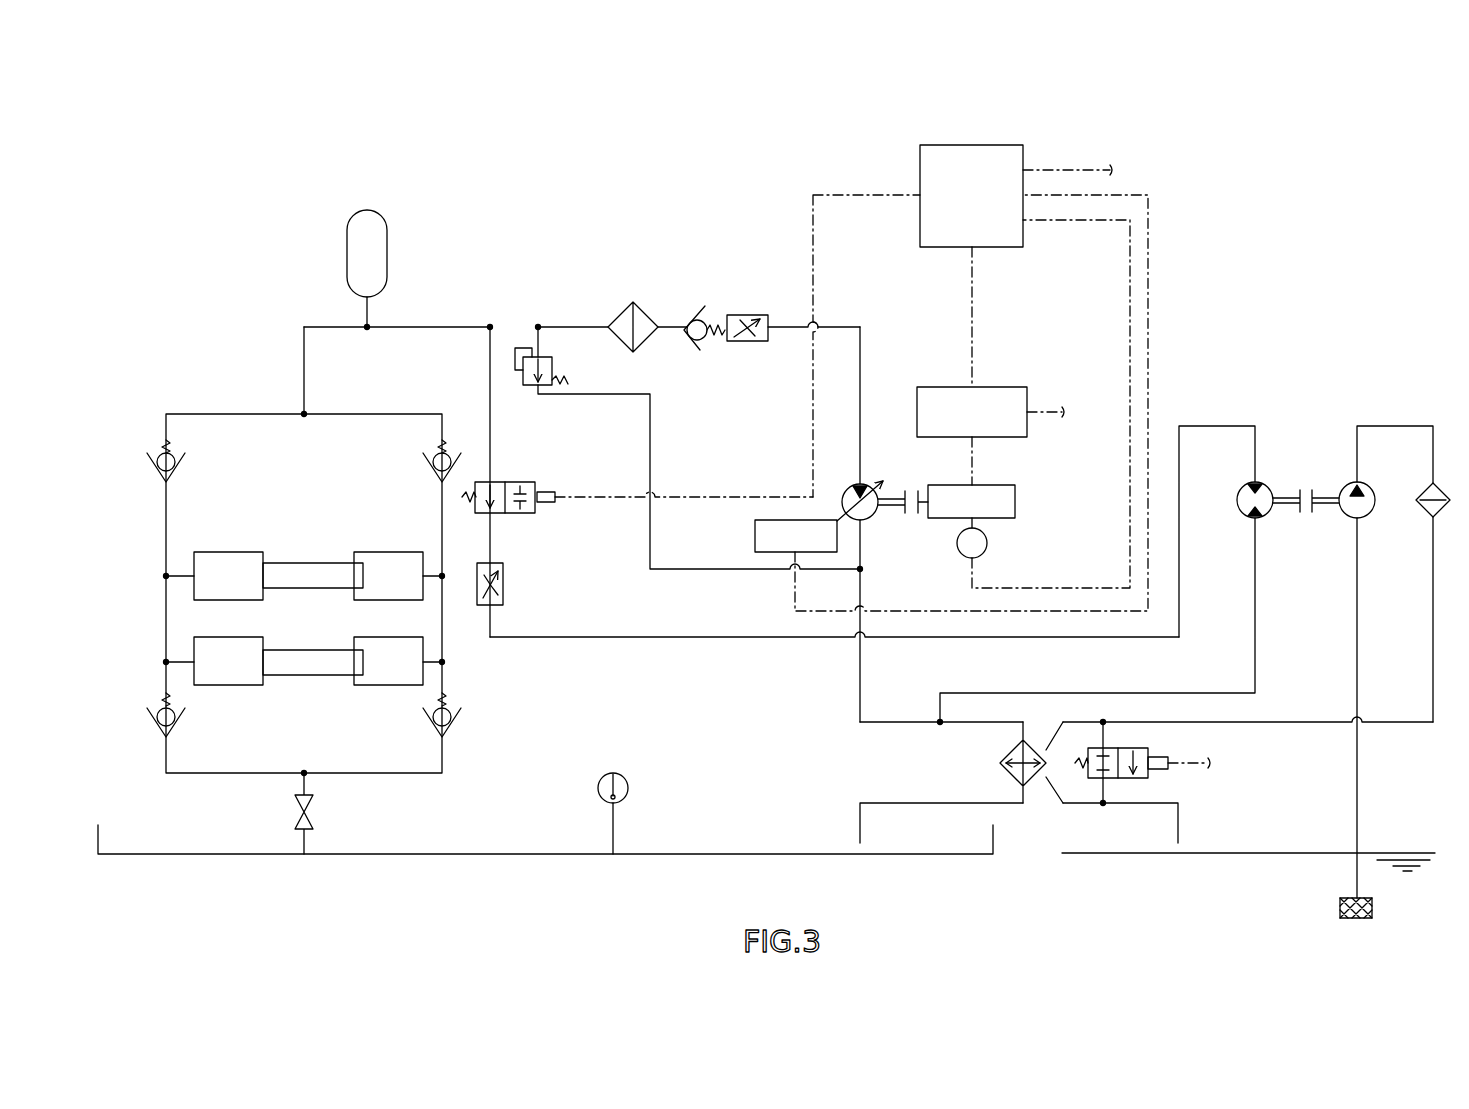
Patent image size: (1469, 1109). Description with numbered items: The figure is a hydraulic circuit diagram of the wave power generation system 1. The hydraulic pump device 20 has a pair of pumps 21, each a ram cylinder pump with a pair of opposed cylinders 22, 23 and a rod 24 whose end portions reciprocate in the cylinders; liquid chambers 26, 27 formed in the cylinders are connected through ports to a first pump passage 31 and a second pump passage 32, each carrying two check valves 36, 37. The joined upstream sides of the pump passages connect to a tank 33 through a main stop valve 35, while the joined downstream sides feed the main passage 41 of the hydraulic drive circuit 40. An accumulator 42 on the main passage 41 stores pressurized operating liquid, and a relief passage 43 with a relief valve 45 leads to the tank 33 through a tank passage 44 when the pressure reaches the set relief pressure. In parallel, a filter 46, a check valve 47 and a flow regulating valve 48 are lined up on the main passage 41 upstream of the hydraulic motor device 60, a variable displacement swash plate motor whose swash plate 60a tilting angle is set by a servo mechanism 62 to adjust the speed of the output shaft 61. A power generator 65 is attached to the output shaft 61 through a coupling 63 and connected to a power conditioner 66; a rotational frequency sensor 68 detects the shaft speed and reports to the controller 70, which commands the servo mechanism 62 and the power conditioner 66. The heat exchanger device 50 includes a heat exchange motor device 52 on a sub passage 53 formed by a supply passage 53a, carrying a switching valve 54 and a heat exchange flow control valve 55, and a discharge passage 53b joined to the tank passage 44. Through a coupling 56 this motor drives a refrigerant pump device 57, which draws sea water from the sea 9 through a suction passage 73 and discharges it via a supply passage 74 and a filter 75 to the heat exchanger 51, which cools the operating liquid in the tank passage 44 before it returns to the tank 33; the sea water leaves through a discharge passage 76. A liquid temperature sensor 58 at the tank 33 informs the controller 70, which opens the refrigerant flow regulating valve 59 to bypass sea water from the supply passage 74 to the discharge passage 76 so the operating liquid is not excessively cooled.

The wave power generation system 1 is at (1348, 122).
The tank / sea 9 is at (1297, 852).
The hydraulic pump device 20 is at (158, 400).
The pump 21 is at (255, 528).
The cylinder 22 is at (220, 552).
The cylinder 23 is at (410, 552).
The rod 24 is at (309, 589).
The first liquid chamber 26 is at (228, 620).
The second liquid chamber 27 is at (388, 620).
The first pump passage 31 is at (166, 610).
The second pump passage 32 is at (442, 650).
The tank 33 is at (481, 857).
The main stop valve 35 is at (313, 812).
The check valve 36 is at (157, 730).
The check valve 37 is at (157, 478).
The hydraulic drive circuit 40 is at (311, 128).
The main passage 41 is at (304, 371).
The accumulator 42 is at (377, 215).
The relief passage 43 is at (615, 395).
The tank passage 44 is at (916, 725).
The relief valve 45 is at (552, 354).
The filter 46 is at (640, 312).
The check valve 47 is at (697, 318).
The flow regulating valve 48 is at (760, 317).
The heat exchanger device 50 is at (1355, 358).
The heat exchanger 51 is at (1005, 768).
The heat exchange motor device 52 is at (1245, 490).
The sub passage 53 is at (712, 648).
The supply passage 53a is at (636, 640).
The discharge passage 53b is at (1256, 640).
The switching valve 54 is at (532, 482).
The heat exchange flow control valve 55 is at (503, 586).
The coupling 56 is at (1305, 518).
The refrigerant pump device 57 is at (1365, 490).
The liquid temperature sensor 58 is at (618, 786).
The refrigerant flow regulating valve 59 is at (1145, 772).
The hydraulic motor device 60 is at (848, 488).
The swash plate 60a is at (873, 522).
The output shaft 61 is at (893, 497).
The servo mechanism 62 is at (755, 528).
The coupling 63 is at (915, 518).
The power generator 65 is at (990, 485).
The power conditioner 66 is at (1010, 387).
The rotational frequency sensor 68 is at (985, 552).
The controller 70 is at (1003, 148).
The suction passage 73 is at (1358, 640).
The supply passage 74 is at (1310, 722).
The filter 75 is at (1440, 490).
The discharge passage 76 is at (1137, 805).